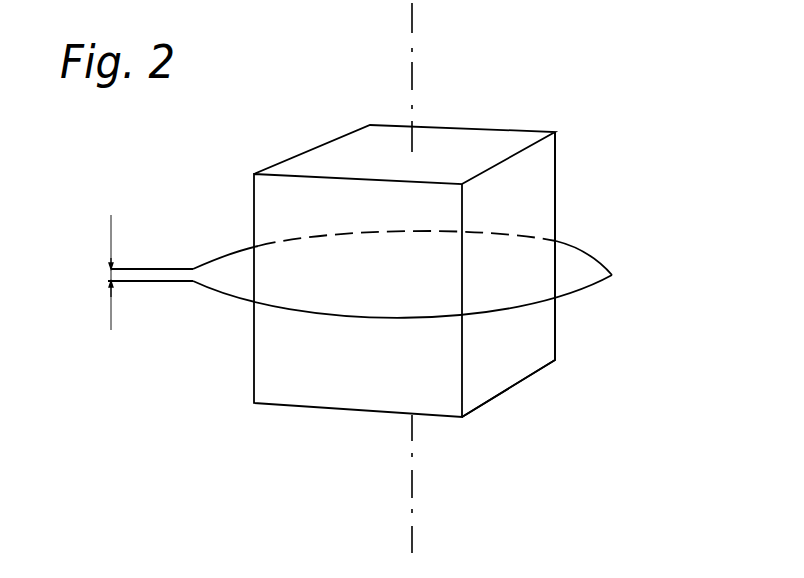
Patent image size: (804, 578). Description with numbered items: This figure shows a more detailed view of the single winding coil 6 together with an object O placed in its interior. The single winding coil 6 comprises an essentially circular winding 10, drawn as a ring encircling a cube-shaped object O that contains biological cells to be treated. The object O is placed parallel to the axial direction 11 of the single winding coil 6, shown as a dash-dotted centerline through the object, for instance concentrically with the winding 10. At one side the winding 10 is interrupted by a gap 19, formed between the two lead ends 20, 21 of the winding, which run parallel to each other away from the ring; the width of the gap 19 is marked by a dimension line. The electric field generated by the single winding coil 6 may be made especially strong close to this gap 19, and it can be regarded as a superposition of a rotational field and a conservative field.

The single winding coil 6 is at (580, 148).
The object O is at (478, 143).
The essentially circular winding 10 is at (612, 275).
The axial direction 11 is at (412, 60).
The gap 19 is at (108, 275).
The upper line 20 is at (158, 268).
The lower line 21 is at (162, 283).